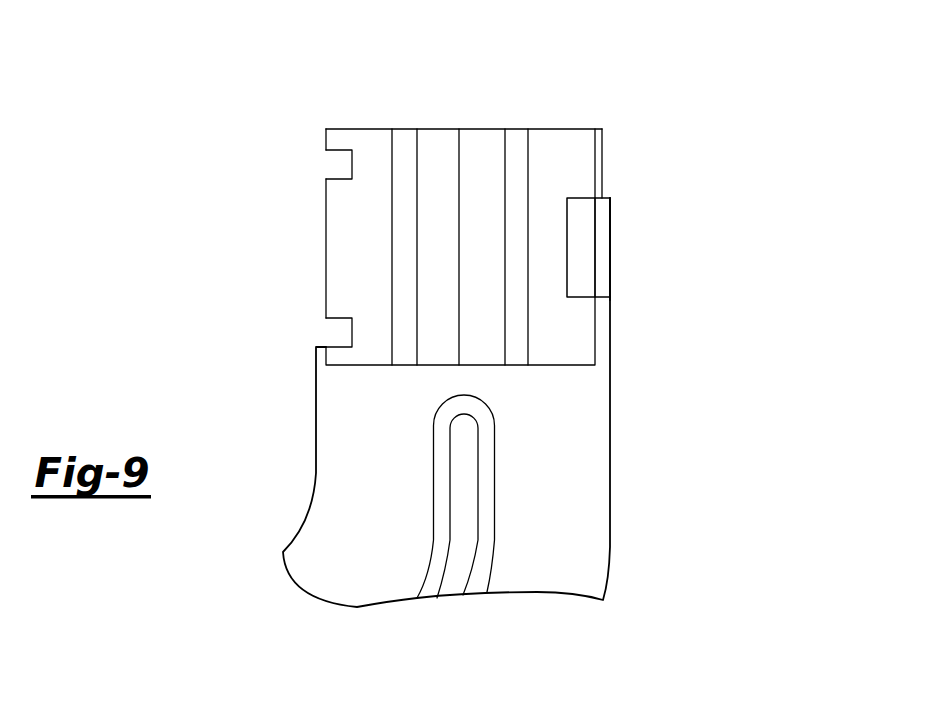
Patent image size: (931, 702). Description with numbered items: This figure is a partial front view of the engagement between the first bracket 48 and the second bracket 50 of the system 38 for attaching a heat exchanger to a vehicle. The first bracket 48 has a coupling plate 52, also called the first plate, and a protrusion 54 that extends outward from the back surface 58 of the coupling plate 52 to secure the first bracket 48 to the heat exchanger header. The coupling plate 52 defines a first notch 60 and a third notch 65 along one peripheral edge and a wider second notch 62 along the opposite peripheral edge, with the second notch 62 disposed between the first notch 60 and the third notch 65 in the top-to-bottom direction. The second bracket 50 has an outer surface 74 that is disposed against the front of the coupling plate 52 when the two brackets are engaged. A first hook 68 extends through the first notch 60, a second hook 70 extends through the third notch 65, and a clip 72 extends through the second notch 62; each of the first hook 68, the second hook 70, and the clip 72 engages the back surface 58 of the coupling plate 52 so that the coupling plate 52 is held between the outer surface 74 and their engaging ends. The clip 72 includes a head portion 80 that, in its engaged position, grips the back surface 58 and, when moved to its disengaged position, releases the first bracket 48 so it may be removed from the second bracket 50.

The system for attaching the heat exchanger to the vehicle 38 is at (621, 84).
The first bracket 48 is at (560, 155).
The second bracket 50 is at (612, 489).
The coupling plate 52 is at (373, 150).
The protrusion 54 is at (481, 167).
The back surface 58 is at (363, 253).
The first notch 60 is at (326, 152).
The second notch 62 is at (579, 200).
The third notch 65 is at (327, 345).
The first hook 68 is at (340, 165).
The second hook 70 is at (340, 330).
The clip 72 is at (612, 279).
The outer surface 74 is at (363, 439).
The head portion 80 is at (577, 247).